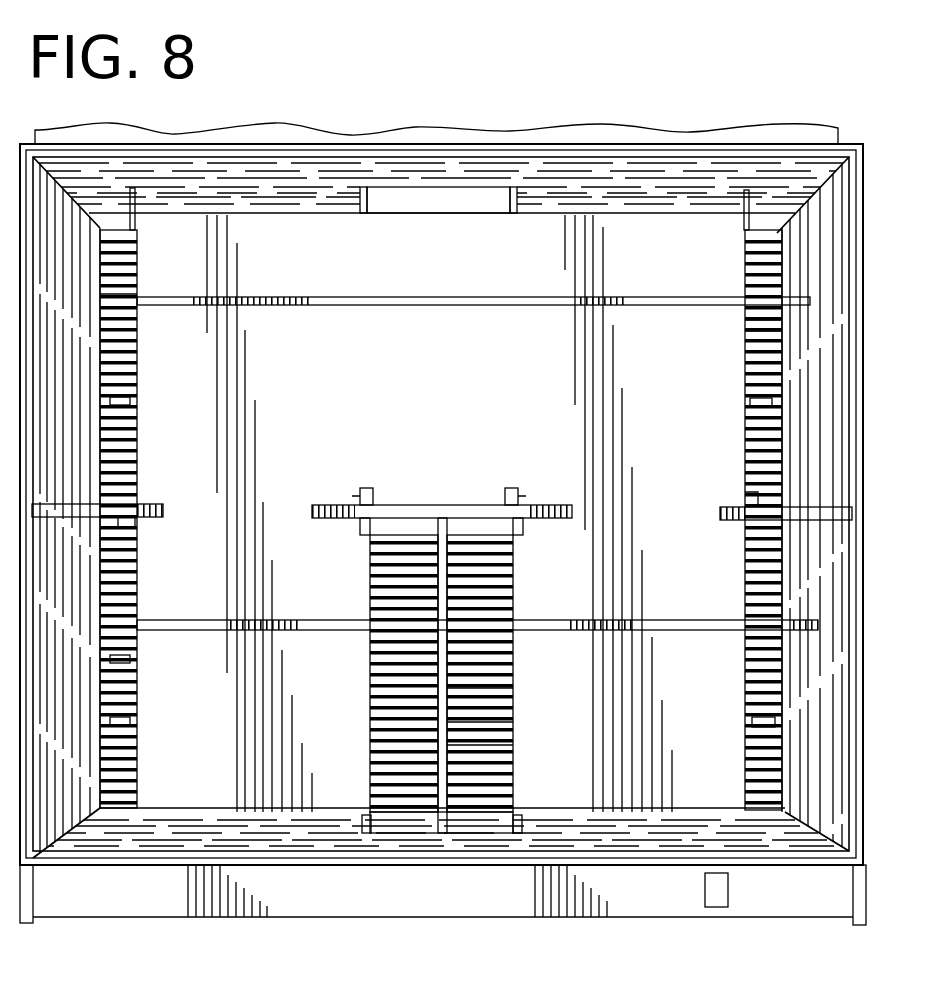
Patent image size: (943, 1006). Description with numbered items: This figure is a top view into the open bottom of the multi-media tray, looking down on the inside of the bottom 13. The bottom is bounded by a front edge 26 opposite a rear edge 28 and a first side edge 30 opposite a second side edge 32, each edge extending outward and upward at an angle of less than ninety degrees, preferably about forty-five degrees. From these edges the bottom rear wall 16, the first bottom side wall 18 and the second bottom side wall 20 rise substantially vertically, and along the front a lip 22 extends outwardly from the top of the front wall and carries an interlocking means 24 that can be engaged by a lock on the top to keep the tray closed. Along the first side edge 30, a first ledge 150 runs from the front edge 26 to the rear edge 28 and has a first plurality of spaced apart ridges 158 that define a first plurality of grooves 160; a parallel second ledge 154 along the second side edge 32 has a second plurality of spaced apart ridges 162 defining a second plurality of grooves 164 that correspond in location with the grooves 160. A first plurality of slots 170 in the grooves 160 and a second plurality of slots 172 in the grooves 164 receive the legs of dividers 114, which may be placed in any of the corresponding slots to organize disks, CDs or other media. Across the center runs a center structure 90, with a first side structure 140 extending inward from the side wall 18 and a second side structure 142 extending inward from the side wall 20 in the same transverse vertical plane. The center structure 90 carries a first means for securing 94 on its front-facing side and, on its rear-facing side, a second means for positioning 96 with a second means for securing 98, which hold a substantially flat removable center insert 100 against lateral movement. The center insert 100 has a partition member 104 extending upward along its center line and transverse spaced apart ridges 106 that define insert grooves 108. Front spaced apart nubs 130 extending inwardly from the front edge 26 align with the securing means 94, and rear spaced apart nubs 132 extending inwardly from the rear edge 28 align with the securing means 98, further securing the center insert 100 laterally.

The inside of the bottom 13 is at (328, 390).
The bottom rear wall 16 is at (470, 160).
The first bottom side wall 18 is at (858, 228).
The second bottom side wall 20 is at (32, 357).
The lip 22 is at (400, 890).
The interlocking means 24 is at (718, 900).
The front edge 26 is at (155, 825).
The rear edge 28 is at (420, 200).
The first side edge 30 is at (758, 697).
The second side edge 32 is at (132, 662).
The center structure 90 is at (413, 512).
The first means for securing 94 is at (365, 527).
The second means for positioning 96 is at (367, 490).
The second means for securing 98 is at (360, 497).
The center insert 100 is at (453, 675).
The partition member 104 is at (445, 690).
The transverse spaced apart ridges 106 is at (503, 690).
The insert grooves 108 is at (505, 745).
The dividers 114 is at (420, 300).
The front spaced apart nubs 130 is at (365, 820).
The rear spaced apart nubs 132 is at (362, 203).
The first side structure 140 is at (830, 512).
The second side structure 142 is at (135, 510).
The first ledge 150 is at (755, 490).
The second ledge 154 is at (125, 527).
The first plurality of spaced apart ridges 158 is at (745, 246).
The first plurality of grooves 160 is at (746, 327).
The second plurality of spaced apart ridges 162 is at (132, 252).
The second plurality of grooves 164 is at (116, 290).
The first plurality of slots 170 is at (756, 402).
The second plurality of slots 172 is at (130, 402).